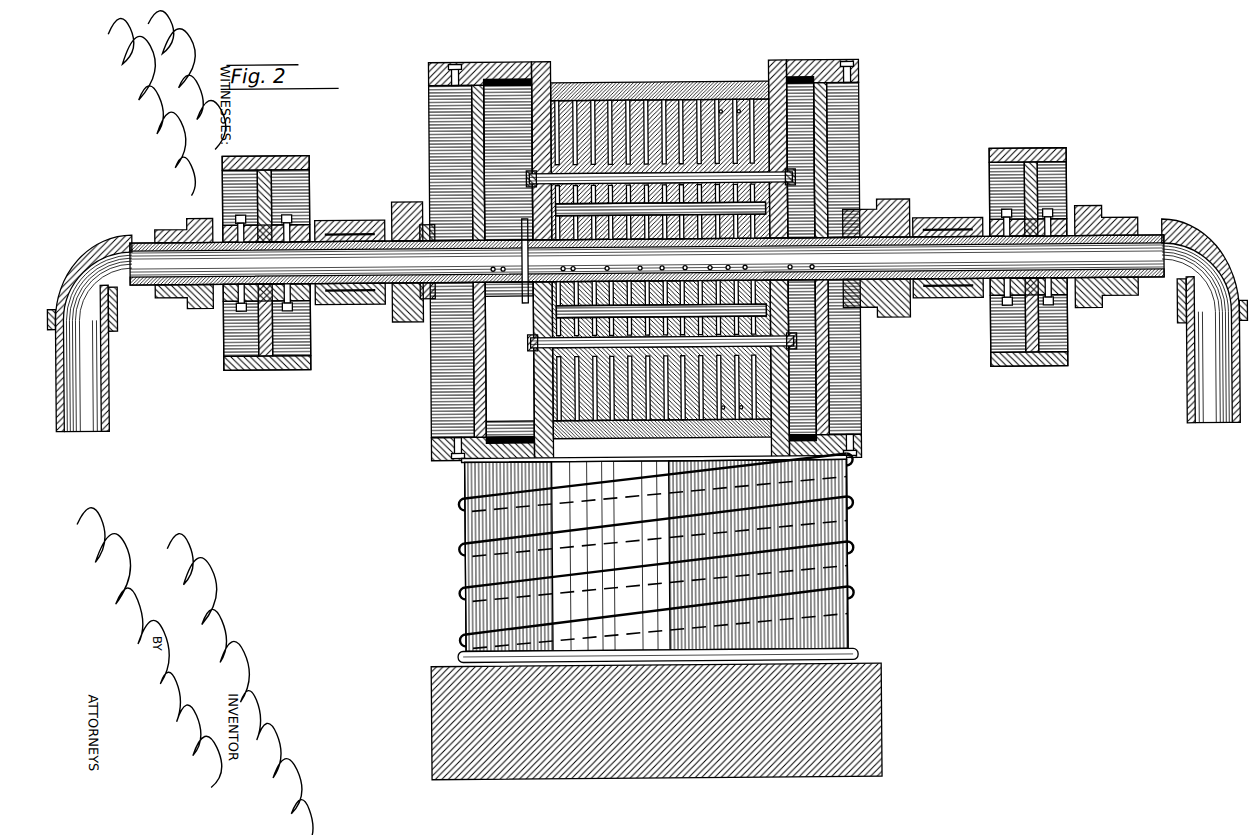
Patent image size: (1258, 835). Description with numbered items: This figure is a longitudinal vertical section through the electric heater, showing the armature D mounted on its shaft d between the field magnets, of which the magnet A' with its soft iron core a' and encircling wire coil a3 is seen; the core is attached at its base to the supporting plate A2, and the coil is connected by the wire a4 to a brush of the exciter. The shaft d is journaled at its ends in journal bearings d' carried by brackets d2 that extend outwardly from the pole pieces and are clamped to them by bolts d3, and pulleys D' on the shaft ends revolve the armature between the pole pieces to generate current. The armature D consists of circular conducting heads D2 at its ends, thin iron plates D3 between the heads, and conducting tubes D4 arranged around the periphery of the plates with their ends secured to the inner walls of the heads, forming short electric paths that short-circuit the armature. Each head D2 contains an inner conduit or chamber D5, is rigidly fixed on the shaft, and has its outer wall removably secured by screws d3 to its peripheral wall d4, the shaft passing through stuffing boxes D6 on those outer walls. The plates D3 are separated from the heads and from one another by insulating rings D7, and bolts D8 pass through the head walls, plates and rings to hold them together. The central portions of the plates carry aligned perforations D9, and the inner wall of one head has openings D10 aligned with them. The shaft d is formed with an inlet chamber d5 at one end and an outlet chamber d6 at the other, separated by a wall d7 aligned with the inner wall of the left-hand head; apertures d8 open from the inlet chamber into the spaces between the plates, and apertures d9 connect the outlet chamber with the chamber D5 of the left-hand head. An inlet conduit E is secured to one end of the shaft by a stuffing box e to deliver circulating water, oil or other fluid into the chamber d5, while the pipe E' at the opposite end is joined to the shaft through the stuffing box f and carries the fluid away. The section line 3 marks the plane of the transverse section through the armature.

The armature D is at (658, 249).
The pulley D' is at (645, 249).
The electric conducting head D2 is at (860, 398).
The circular plate D3 is at (611, 437).
The tube D4 is at (665, 437).
The inner conduit or chamber D5 is at (790, 140).
The stuffing box D6 is at (900, 200).
The insulating ring D7 is at (795, 343).
The bolt D8 is at (530, 347).
The perforation D9 is at (640, 262).
The opening D10 is at (790, 312).
The shaft d is at (648, 208).
The journal bearing d' is at (649, 306).
The bracket d2 is at (950, 228).
The bolt or screw d3 is at (852, 452).
The peripheral wall d4 is at (860, 445).
The inlet chamber d5 is at (647, 260).
The outlet chamber d6 is at (280, 263).
The wall d7 is at (495, 261).
The aperture d8 is at (652, 259).
The aperture d9 is at (522, 300).
The section line 3 is at (733, 254).
The stuffing box f is at (165, 227).
The stuffing box e is at (1106, 245).
The inlet conduit E is at (90, 333).
The right elbow pipe E' is at (1205, 320).
The soft iron core a' is at (644, 504).
The wire coil a3 is at (845, 592).
The wire a4 is at (463, 460).
The field magnet A' is at (684, 561).
The supporting plate A2 is at (656, 721).